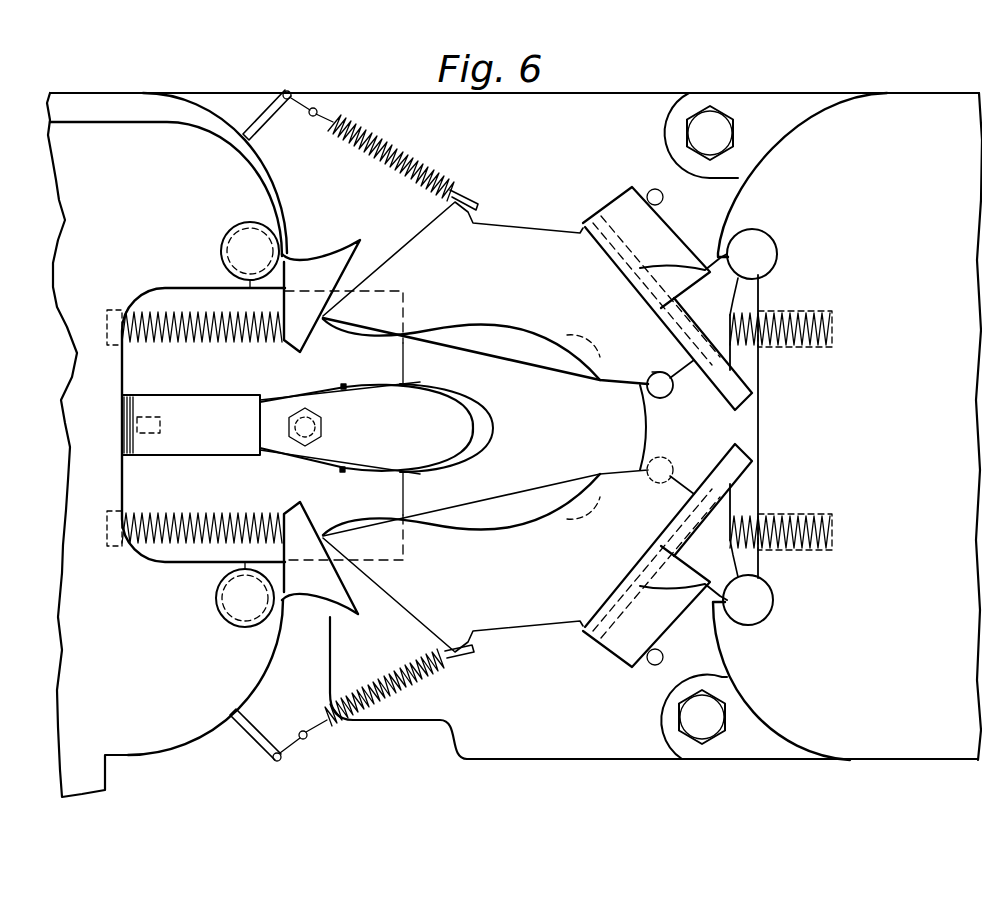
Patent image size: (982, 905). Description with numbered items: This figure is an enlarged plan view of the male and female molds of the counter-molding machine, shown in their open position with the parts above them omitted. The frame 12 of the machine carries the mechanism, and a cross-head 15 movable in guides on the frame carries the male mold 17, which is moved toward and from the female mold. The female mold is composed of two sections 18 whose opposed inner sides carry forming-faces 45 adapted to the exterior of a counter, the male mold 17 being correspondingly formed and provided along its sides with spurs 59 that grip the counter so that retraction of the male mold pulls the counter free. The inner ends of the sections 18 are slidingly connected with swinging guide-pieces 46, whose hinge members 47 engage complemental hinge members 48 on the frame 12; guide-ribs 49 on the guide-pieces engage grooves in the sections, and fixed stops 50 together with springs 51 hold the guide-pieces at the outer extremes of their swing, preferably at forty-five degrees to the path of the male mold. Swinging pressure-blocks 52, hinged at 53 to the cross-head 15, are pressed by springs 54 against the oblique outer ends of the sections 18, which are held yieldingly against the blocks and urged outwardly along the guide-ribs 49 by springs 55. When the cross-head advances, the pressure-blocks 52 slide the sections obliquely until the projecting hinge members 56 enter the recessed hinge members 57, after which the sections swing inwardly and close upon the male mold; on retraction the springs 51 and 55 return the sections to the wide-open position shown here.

The frame 12 is at (656, 426).
The cross-head 15 is at (75, 268).
The male mold 17 is at (455, 416).
The female mold sections 18 is at (525, 427).
The forming-faces 45 is at (566, 355).
The swinging guide-pieces 46 is at (705, 293).
The hinge members 47 is at (760, 254).
The complemental hinge members 48 is at (763, 233).
The guide-ribs 49 is at (720, 410).
The fixed stops 50 is at (663, 197).
The springs 51 is at (747, 343).
The swinging pressure-blocks 52 is at (332, 258).
The hinge 53 is at (250, 240).
The springs 54 is at (255, 342).
The springs 55 is at (408, 168).
The projecting hinge members 56 is at (658, 396).
The recessed hinge members 57 is at (652, 372).
The spurs 59 is at (345, 387).